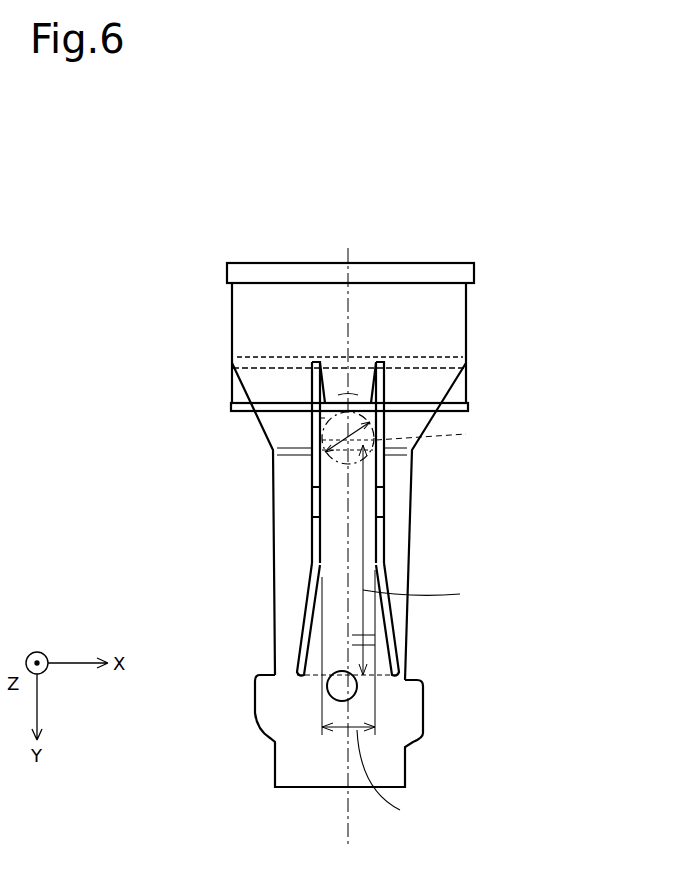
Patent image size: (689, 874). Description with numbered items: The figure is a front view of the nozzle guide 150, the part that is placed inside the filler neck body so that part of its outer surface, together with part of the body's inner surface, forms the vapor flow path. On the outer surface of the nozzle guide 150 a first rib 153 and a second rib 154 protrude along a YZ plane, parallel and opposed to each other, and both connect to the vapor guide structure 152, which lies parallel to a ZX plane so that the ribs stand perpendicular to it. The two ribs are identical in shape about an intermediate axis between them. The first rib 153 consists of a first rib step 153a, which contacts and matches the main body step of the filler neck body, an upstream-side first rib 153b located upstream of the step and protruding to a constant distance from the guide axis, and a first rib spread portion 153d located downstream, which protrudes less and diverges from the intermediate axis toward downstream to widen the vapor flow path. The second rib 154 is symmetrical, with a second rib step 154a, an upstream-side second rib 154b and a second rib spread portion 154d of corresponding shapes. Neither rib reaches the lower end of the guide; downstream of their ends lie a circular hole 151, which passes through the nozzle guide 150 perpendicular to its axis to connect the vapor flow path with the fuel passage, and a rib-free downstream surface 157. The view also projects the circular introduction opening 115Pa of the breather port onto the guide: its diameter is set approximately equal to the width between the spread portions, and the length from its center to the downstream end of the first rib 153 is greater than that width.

The nozzle guide 150 is at (458, 218).
The vapor guide structure 152 is at (343, 405).
The introduction opening 115Pa is at (312, 418).
The first rib 153 is at (178, 460).
The first rib step 153a is at (312, 500).
The upstream-side first rib 153b is at (312, 470).
The first rib spread portion 153d is at (312, 592).
The second rib 154 is at (527, 460).
The second rib step 154a is at (384, 500).
The upstream-side second rib 154b is at (384, 478).
The second rib spread portion 154d is at (387, 593).
The circular hole 151 is at (359, 688).
The downstream surface 157 is at (323, 768).